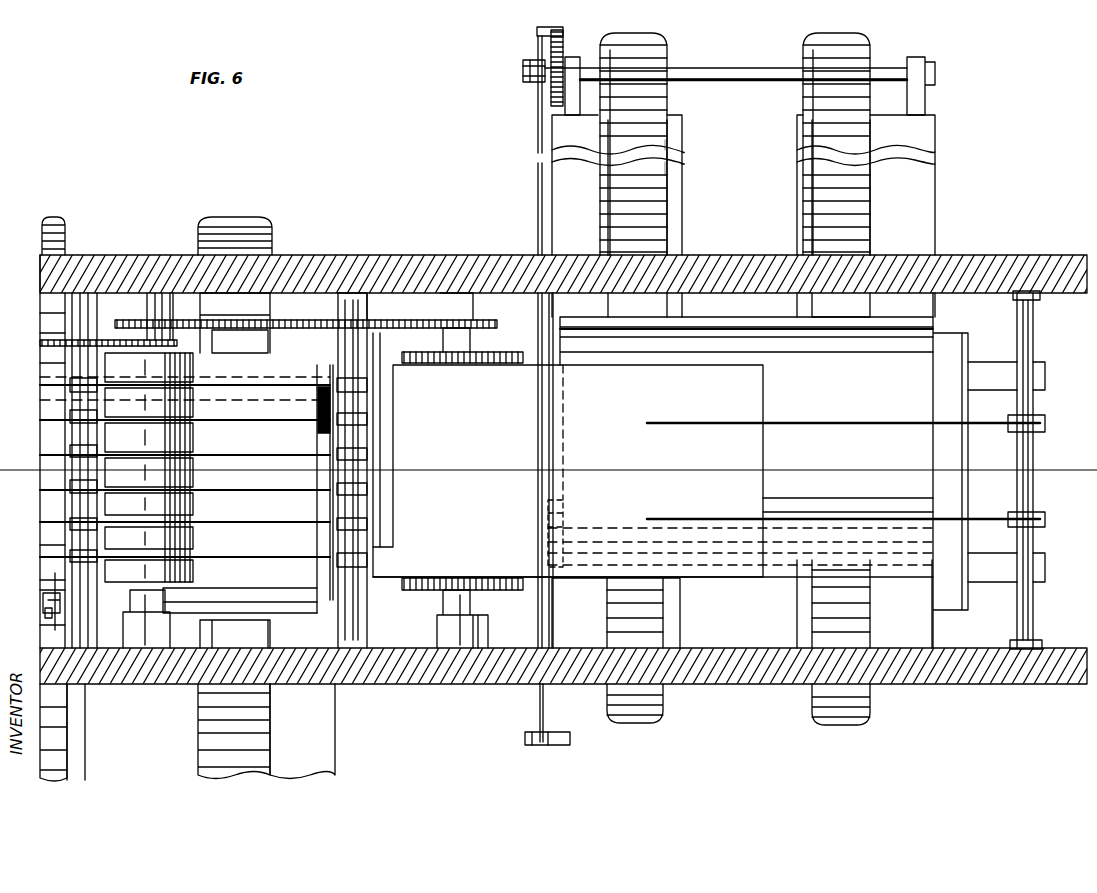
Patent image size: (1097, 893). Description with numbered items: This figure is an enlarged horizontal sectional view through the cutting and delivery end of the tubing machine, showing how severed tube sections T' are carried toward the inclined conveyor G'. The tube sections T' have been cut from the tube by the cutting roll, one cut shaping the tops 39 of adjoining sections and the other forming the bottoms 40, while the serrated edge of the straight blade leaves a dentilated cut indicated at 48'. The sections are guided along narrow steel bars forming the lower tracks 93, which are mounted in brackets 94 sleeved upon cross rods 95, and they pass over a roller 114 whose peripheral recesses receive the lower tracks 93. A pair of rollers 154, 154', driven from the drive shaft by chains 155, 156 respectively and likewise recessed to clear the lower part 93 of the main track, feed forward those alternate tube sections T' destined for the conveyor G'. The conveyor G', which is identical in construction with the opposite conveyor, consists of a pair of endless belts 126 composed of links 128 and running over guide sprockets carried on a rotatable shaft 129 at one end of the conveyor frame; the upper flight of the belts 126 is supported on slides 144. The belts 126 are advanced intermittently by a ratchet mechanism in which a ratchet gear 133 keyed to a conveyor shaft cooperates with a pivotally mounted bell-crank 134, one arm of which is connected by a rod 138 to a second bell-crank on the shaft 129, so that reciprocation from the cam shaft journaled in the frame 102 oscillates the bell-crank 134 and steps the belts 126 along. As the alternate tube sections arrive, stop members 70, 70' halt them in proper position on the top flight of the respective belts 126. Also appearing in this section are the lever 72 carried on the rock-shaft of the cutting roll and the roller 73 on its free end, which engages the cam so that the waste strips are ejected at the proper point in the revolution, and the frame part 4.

The frame 4 is at (240, 470).
The tops of adjoining sections 39 is at (395, 440).
The bottoms of sections 40 is at (760, 440).
The dentilated cut 48' is at (843, 499).
The stop member 70 is at (371, 470).
The stop member 70' is at (989, 470).
The lever 72 is at (43, 598).
The roller 73 is at (45, 613).
The lower tracks 93 is at (285, 390).
The brackets 94 is at (70, 498).
The cross rods 95 is at (87, 632).
The frame 102 is at (758, 250).
The roller 114 is at (193, 373).
The endless belts 126 is at (820, 99).
The links 128 is at (827, 175).
The rotatable shaft 129 is at (737, 72).
The ratchet gear 133 is at (562, 45).
The bell-crank 134 is at (543, 55).
The rod 138 is at (537, 215).
The slides 144 is at (602, 447).
The roller 154 is at (360, 435).
The roller 154' is at (467, 613).
The chain 155 is at (100, 340).
The chain 156 is at (402, 315).
The conveyor G' is at (743, 261).
The tube sections T' is at (603, 447).